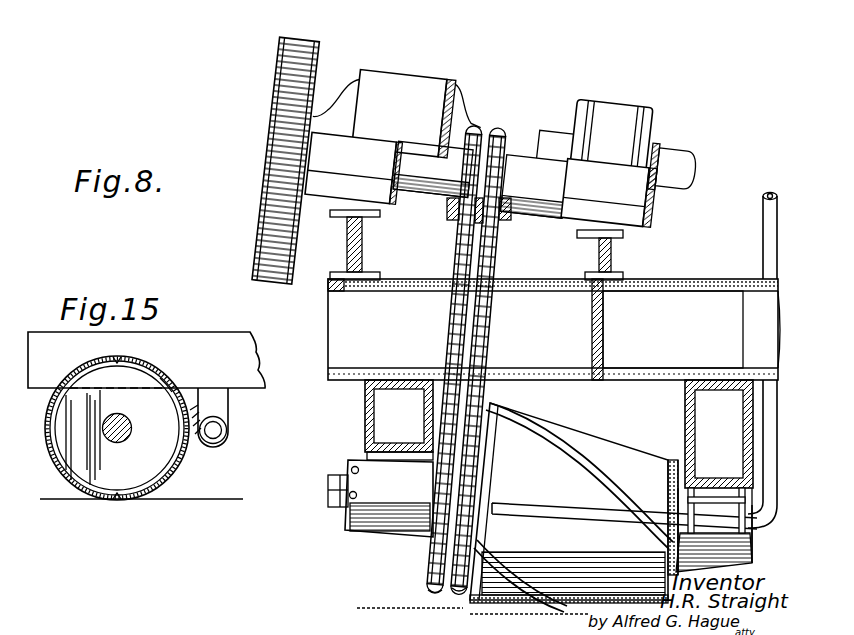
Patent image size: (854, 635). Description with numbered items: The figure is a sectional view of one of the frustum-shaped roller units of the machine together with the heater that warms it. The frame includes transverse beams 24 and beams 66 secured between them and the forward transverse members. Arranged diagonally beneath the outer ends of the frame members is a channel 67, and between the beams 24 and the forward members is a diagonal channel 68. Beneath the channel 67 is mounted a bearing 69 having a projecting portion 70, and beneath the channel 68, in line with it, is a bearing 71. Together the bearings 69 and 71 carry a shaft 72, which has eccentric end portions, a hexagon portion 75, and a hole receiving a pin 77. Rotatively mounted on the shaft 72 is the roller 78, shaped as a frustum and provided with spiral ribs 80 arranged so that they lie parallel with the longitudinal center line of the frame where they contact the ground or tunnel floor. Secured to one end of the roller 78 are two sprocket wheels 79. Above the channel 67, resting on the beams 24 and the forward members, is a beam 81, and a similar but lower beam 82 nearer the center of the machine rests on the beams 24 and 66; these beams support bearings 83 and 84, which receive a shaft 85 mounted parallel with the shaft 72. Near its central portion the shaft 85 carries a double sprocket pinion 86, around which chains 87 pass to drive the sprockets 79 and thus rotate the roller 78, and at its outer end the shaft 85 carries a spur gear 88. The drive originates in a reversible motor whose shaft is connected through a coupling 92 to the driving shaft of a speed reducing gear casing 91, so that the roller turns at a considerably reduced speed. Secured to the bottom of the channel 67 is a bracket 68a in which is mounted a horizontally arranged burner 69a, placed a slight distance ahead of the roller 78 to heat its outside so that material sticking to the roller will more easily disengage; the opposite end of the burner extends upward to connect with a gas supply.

In FIG. 8, the spur gear 88 is at (310, 52).
In FIG. 8, the speed reducing gear casing 91 is at (398, 113).
In FIG. 8, the bearing 83 is at (353, 168).
In FIG. 8, the shaft 85 is at (433, 169).
In FIG. 8, the double sprocket pinion 86 is at (518, 188).
In FIG. 8, the bearing 84 is at (609, 193).
In FIG. 8, the coupling 92 is at (612, 133).
In FIG. 8, the beam 81 is at (360, 250).
In FIG. 8, the beam 82 is at (608, 258).
In FIG. 8, the chain 87 is at (500, 249).
In FIG. 8, the transverse beam 24 is at (553, 329).
In FIG. 8, the beam 66 is at (691, 329).
In FIG. 8, the shaft 72 is at (756, 529).
In FIG. 15, the shaft 72 is at (119, 443).
In FIG. 8, the channel 67 is at (365, 420).
In FIG. 15, the channel 67 is at (146, 360).
In FIG. 8, the bearing 69 is at (389, 498).
In FIG. 8, the projecting portion 70 is at (350, 467).
In FIG. 8, the pin 77 is at (350, 499).
In FIG. 8, the hexagon portion 75 is at (328, 493).
In FIG. 8, the spiral rib 80 is at (574, 503).
In FIG. 15, the spiral rib 80 is at (177, 471).
In FIG. 8, the roller 78 is at (573, 507).
In FIG. 15, the roller 78 is at (163, 382).
In FIG. 8, the burner 69a is at (599, 516).
In FIG. 15, the burner 69a is at (228, 433).
In FIG. 8, the diagonal channel 68 is at (685, 421).
In FIG. 8, the bearing 71 is at (714, 530).
In FIG. 8, the bracket 68a is at (753, 538).
In FIG. 15, the bracket 68a is at (228, 407).
In FIG. 8, the sprocket wheel 79 is at (462, 583).